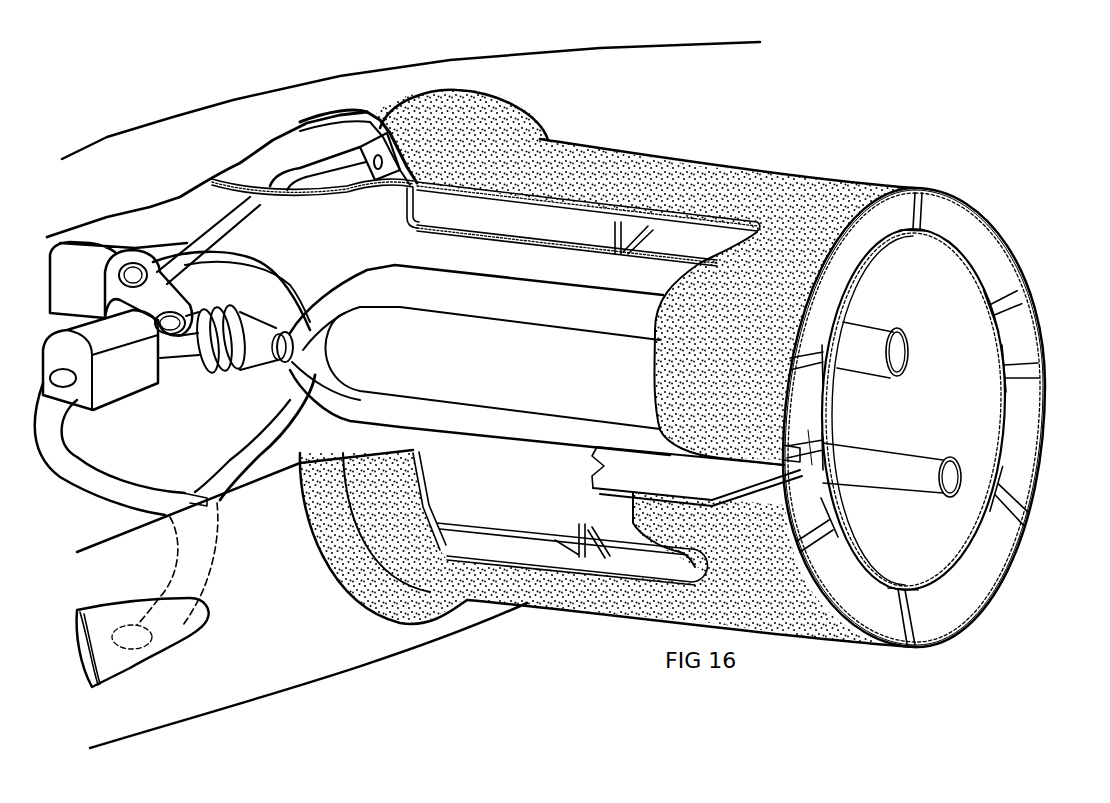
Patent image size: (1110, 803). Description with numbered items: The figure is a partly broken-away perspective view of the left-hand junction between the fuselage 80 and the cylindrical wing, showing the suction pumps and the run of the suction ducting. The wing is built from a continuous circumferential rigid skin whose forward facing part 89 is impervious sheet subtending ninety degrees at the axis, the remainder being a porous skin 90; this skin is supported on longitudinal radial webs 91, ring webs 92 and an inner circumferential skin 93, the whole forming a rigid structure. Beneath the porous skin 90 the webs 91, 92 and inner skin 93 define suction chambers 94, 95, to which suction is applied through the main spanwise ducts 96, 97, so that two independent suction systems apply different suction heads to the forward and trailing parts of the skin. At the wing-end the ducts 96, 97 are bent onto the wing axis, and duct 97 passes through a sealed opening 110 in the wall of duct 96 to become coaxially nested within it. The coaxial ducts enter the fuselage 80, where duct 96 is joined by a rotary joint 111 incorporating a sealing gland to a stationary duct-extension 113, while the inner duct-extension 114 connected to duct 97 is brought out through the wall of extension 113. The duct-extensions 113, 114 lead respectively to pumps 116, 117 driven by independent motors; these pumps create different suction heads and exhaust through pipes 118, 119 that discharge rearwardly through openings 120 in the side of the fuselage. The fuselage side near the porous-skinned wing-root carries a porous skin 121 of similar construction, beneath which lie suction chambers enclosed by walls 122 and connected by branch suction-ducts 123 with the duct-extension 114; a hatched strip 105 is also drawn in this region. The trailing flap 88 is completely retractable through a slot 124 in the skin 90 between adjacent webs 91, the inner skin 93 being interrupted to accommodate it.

The fuselage 80 is at (334, 690).
The trailing flap 88 is at (612, 460).
The forward facing part of the skin 89 is at (1040, 412).
The porous skin 90 is at (527, 160).
The longitudinal radial webs 91 is at (1000, 295).
The ring webs 92 is at (612, 233).
The inner circumferential skin 93 is at (875, 266).
The suction chambers 94 is at (960, 235).
The suction chambers 95 is at (812, 425).
The main spanwise duct 96 is at (471, 405).
The main spanwise duct 97 is at (425, 305).
The hatched strip 105 is at (312, 198).
The sealed opening 110 is at (285, 362).
The rotary joint 111 is at (232, 318).
The duct-extension 113 is at (190, 350).
The inner duct-extension 114 is at (175, 302).
The pump 116 is at (123, 380).
The pump 117 is at (72, 262).
The exhaust pipe 118 is at (110, 478).
The exhaust pipe 119 is at (237, 458).
The opening 120 is at (98, 686).
The porous skin 121 is at (470, 108).
The walls 122 is at (372, 150).
The branch suction-duct 123 is at (255, 222).
The slot 124 is at (783, 452).